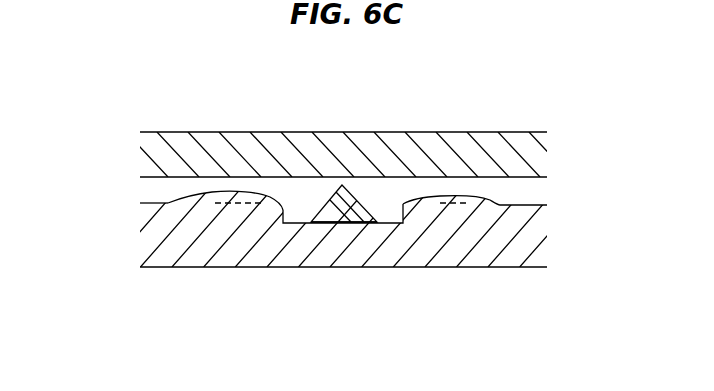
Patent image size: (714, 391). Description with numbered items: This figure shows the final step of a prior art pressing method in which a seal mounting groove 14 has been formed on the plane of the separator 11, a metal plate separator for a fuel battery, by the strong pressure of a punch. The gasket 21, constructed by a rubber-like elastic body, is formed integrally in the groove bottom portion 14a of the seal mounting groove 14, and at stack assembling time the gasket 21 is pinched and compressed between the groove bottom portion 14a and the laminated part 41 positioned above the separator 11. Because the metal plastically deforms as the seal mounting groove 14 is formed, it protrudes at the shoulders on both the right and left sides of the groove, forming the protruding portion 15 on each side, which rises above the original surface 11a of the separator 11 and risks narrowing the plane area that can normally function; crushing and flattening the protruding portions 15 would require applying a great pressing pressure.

The laminated part 41 is at (512, 160).
The separator 11 is at (513, 235).
The surface of substrate 11a is at (162, 195).
The protruding portion 15 is at (240, 190).
The seal mounting groove 14 is at (390, 217).
The groove bottom portion 14a is at (355, 226).
The gasket 21 is at (342, 186).